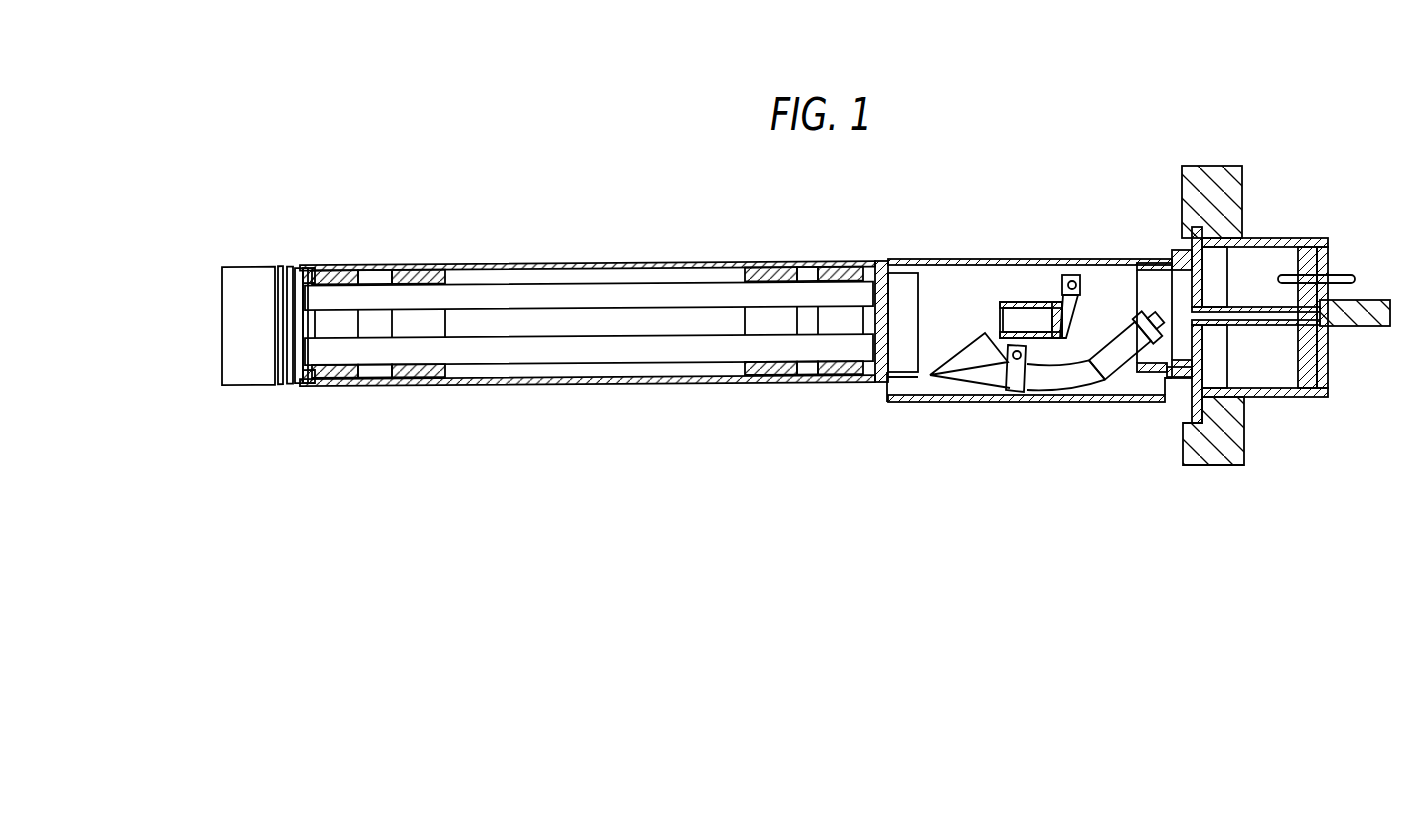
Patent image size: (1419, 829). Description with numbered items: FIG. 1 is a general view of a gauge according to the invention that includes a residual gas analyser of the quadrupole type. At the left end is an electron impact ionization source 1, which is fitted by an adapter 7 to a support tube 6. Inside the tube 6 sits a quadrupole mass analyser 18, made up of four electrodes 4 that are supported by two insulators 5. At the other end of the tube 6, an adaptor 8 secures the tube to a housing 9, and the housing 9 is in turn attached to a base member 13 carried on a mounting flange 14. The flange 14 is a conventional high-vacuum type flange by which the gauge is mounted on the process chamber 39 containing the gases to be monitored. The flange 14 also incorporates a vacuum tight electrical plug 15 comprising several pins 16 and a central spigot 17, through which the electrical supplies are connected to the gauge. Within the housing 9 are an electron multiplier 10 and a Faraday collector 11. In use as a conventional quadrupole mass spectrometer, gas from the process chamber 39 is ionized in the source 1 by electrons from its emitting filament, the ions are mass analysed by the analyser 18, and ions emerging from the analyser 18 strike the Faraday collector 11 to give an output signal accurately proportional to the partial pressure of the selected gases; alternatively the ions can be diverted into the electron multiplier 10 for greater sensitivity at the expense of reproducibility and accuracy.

The electron impact ionization source 1 is at (260, 373).
The electrodes 4 is at (500, 352).
The insulators 5 is at (410, 267).
The support tube 6 is at (648, 263).
The adapter 7 is at (313, 385).
The adaptor 8 is at (884, 375).
The housing 9 is at (925, 260).
The electron multiplier 10 is at (1057, 383).
The Faraday collector 11 is at (1013, 305).
The base member 13 is at (1171, 258).
The mounting flange 14 is at (1232, 168).
The vacuum tight electrical plug 15 is at (1323, 350).
The pins 16 is at (1352, 272).
The central spigot 17 is at (1384, 300).
The quadrupole mass analyser 18 is at (505, 322).
The process chamber 39 is at (616, 446).